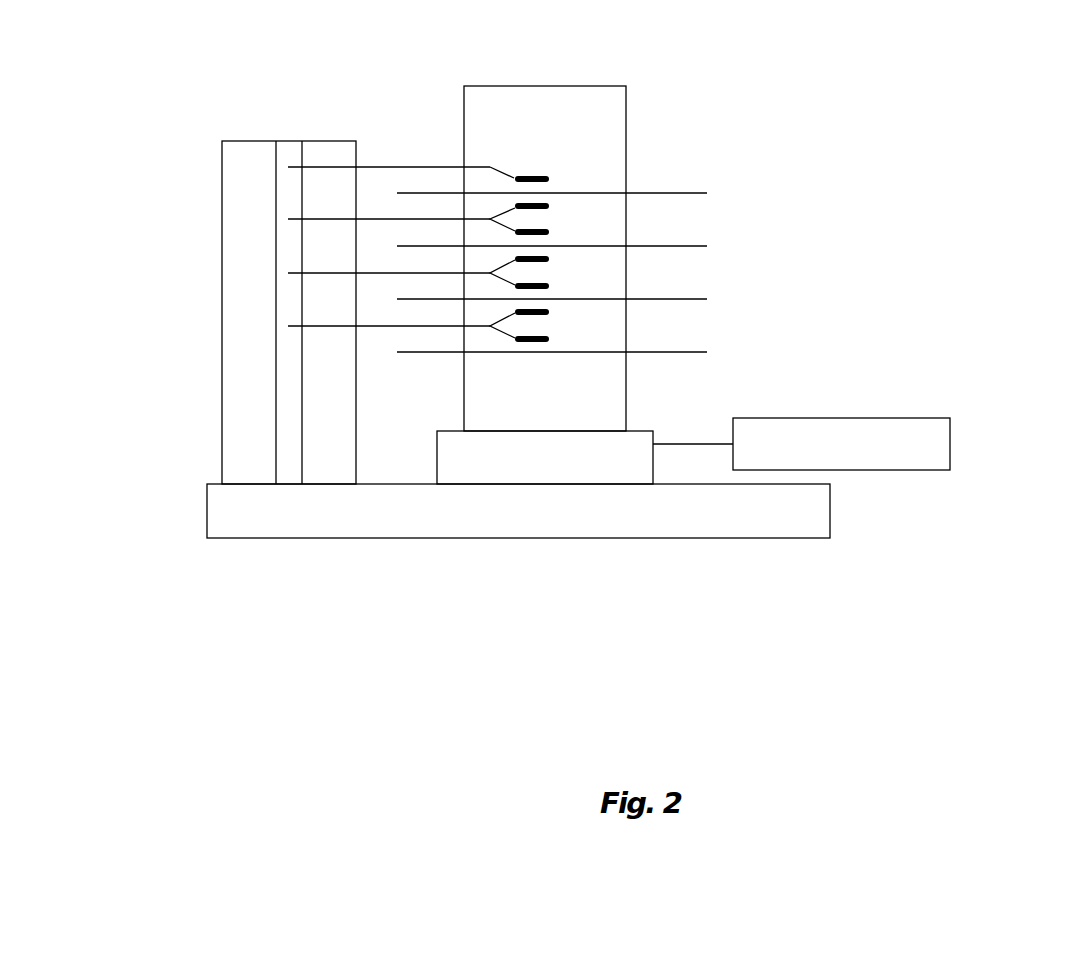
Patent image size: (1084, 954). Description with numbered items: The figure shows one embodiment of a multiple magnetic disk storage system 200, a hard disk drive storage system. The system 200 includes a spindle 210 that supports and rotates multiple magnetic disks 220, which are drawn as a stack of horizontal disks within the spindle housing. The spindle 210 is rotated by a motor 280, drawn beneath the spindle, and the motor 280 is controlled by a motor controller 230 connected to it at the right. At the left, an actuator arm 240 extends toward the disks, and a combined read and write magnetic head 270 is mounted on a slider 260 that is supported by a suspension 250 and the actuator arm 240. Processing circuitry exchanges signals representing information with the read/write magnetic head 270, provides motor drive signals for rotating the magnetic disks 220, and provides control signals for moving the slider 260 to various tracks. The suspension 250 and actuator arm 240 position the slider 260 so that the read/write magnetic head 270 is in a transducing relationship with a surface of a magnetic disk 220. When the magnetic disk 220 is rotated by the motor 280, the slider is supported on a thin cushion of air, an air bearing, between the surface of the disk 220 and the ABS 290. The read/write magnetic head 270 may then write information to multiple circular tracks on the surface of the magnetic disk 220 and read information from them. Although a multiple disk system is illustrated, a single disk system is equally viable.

The multiple magnetic disk storage system 200 is at (82, 624).
The spindle 210 is at (612, 86).
The magnetic disks 220 is at (666, 192).
The motor controller 230 is at (872, 418).
The actuator arm 240 is at (412, 166).
The suspension 250 is at (505, 166).
The slider 260 is at (533, 175).
The read/write magnetic head 270 is at (545, 342).
The motor 280 is at (641, 431).
The ABS 290 is at (540, 173).